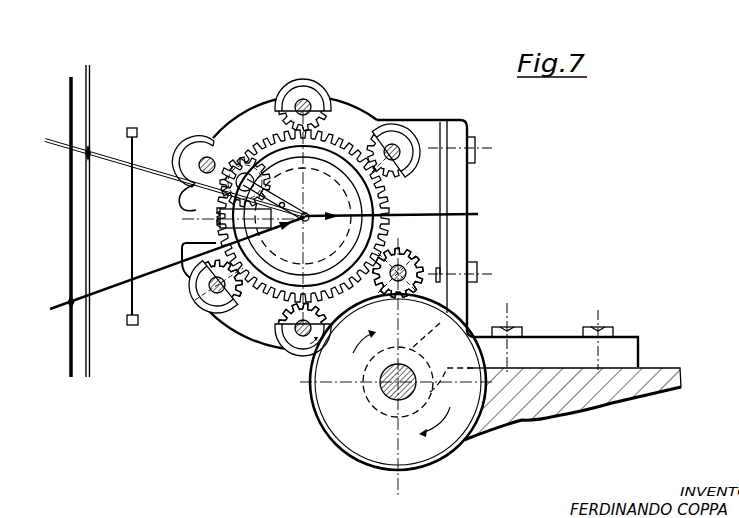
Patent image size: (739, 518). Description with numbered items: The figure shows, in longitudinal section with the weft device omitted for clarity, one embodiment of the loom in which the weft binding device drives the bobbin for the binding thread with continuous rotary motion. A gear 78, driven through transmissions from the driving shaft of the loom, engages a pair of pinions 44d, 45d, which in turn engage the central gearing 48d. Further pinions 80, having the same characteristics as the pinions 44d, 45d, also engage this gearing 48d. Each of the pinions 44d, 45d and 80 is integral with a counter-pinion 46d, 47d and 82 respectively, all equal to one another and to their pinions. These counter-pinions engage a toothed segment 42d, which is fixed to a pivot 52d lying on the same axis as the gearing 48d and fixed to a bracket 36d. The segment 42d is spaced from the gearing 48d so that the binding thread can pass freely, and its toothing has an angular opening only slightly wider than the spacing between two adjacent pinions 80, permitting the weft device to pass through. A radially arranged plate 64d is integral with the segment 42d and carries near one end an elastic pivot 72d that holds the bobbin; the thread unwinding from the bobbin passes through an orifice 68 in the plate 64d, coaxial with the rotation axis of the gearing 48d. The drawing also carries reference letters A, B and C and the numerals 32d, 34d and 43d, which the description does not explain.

The rod end block 32d is at (131, 327).
The control rod 34d is at (128, 220).
The bracket 36d is at (342, 105).
The toothed segment 42d is at (398, 205).
The planet gear 43d is at (272, 298).
The pinion 44d is at (300, 353).
The pinion 45d is at (420, 264).
The counter-pinion 46d is at (303, 328).
The counter-pinion 47d is at (398, 273).
The gearing 48d is at (262, 158).
The pivot 52d is at (260, 238).
The plate 64d is at (305, 217).
The orifice 68 is at (310, 211).
The elastic pivot 72d is at (240, 132).
The gear 78 is at (370, 440).
The pinions 80 is at (289, 80).
The counter-pinion 82 is at (310, 97).
The reference line A is at (477, 212).
The reference line B is at (175, 226).
The reference point C is at (293, 177).